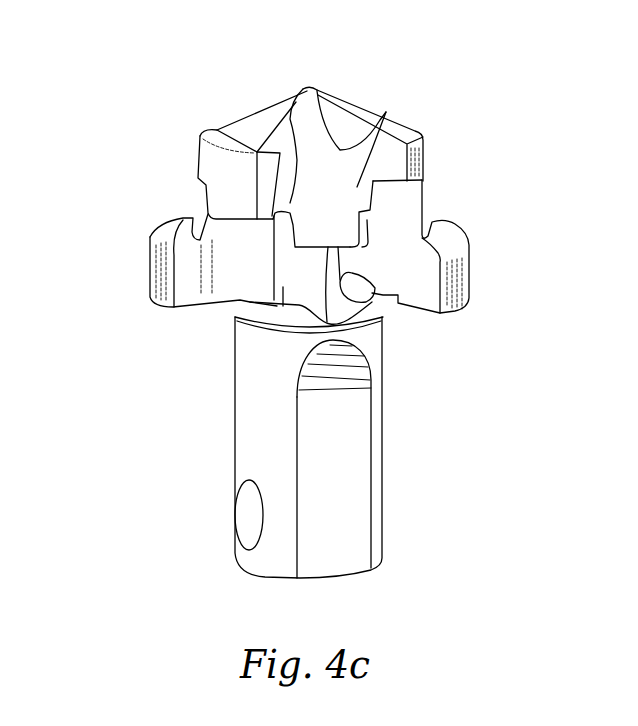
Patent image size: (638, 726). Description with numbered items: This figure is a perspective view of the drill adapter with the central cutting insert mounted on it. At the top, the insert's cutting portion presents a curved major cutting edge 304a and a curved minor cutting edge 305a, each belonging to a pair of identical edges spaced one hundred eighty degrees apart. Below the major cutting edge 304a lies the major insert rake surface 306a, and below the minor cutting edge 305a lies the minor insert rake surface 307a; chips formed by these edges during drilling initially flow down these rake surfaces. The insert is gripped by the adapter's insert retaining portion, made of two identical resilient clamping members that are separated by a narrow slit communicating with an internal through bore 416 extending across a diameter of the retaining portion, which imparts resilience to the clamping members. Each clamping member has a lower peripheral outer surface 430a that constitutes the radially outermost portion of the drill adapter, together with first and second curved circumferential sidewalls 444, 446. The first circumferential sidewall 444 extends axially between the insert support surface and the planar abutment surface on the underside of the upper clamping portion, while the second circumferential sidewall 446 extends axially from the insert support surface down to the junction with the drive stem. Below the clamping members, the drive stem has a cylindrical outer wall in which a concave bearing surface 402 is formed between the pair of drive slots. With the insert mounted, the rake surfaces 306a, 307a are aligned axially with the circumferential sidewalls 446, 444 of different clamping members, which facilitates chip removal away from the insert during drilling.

The major cutting edge 304a is at (277, 103).
The minor cutting edge 305a is at (349, 117).
The major insert rake surface 306a is at (292, 117).
The minor insert rake surface 307a is at (377, 125).
The first circumferential sidewall 444 is at (397, 210).
The lower peripheral outer surface 430a is at (163, 277).
The second circumferential sidewall 446 is at (294, 275).
The internal through bore 416 is at (360, 288).
The concave bearing surface 402 is at (247, 513).